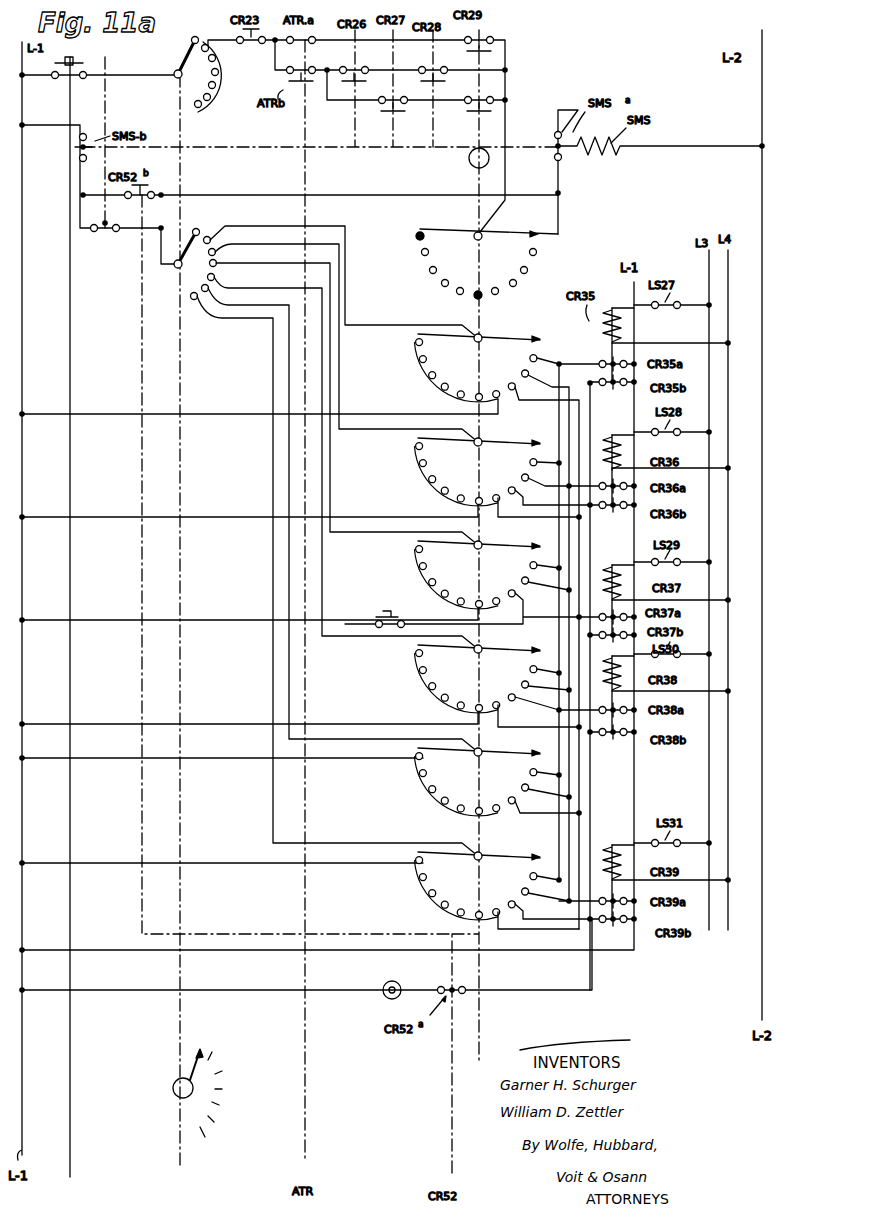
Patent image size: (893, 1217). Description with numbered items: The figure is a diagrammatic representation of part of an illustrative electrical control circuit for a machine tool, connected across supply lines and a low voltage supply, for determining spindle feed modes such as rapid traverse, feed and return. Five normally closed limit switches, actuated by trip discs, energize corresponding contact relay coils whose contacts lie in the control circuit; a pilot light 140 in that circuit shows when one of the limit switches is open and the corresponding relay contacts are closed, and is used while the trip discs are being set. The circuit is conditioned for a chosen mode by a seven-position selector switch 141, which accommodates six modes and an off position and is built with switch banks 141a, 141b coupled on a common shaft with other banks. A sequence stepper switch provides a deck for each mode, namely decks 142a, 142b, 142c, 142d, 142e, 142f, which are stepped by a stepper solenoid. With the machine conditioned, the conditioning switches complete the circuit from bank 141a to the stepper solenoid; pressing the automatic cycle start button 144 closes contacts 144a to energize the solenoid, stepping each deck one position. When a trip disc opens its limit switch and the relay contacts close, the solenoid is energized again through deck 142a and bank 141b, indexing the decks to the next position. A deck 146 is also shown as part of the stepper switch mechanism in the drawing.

The pilot light 140 is at (385, 986).
The selector switch 141 is at (174, 1080).
The switch bank 141a is at (176, 75).
The switch bank 141b is at (175, 267).
The sequence stepper switch deck 142a is at (425, 388).
The sequence stepper switch deck 142b is at (425, 483).
The sequence stepper switch deck 142c is at (425, 578).
The sequence stepper switch deck 142d is at (413, 684).
The sequence stepper switch deck 142e is at (425, 797).
The sequence stepper switch deck 142f is at (425, 889).
The automatic cycle start button 144 is at (75, 62).
The contacts 144a is at (61, 85).
The stepping switch deck 146 is at (423, 284).